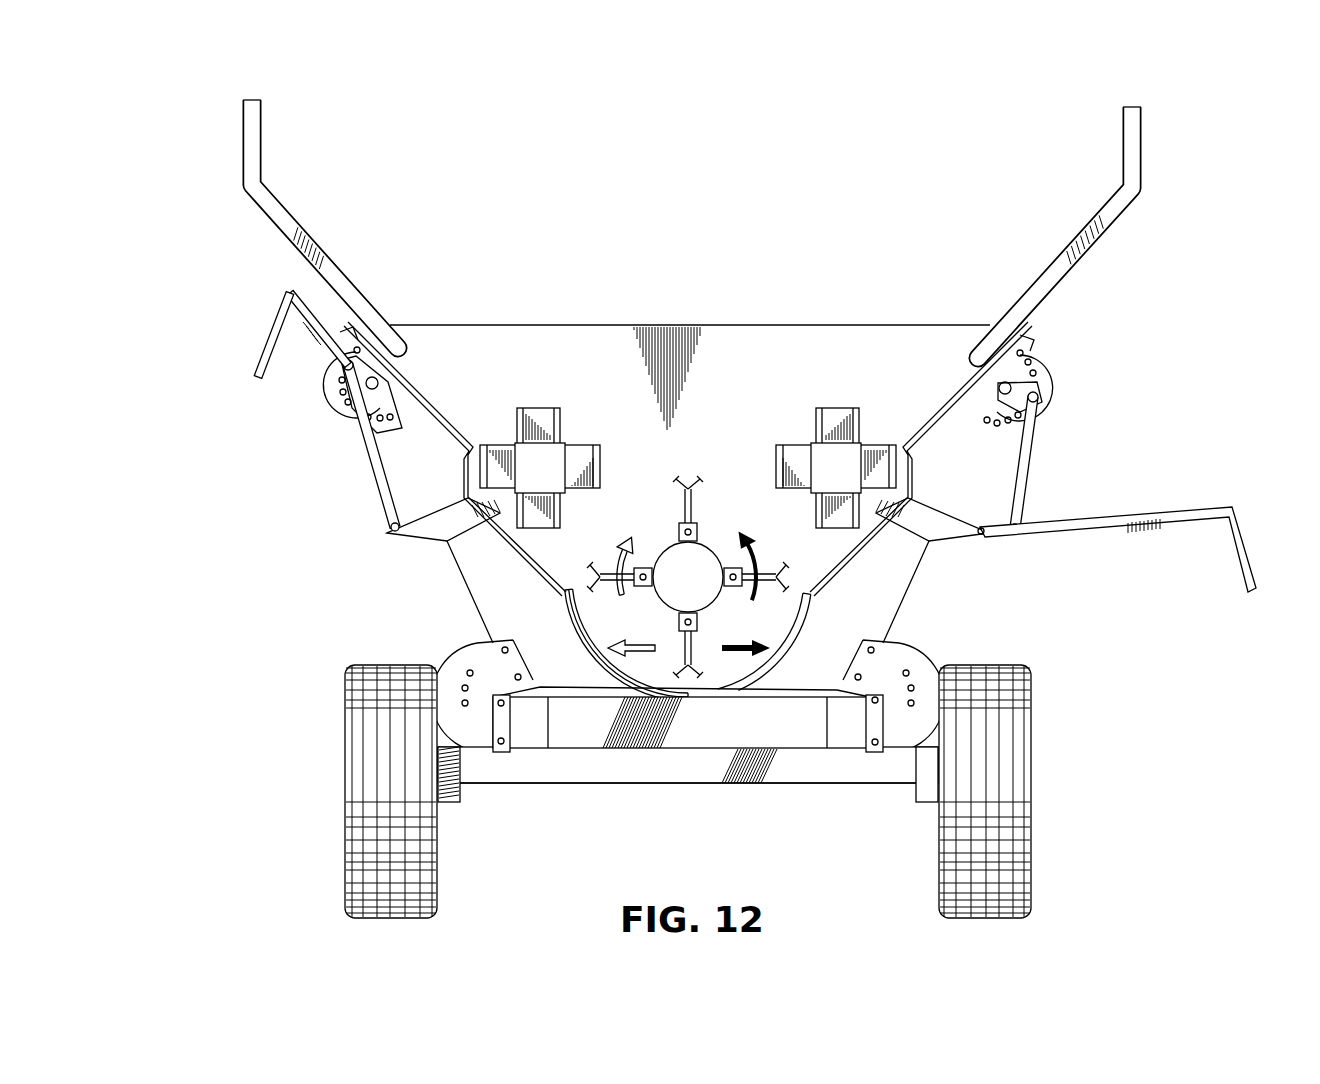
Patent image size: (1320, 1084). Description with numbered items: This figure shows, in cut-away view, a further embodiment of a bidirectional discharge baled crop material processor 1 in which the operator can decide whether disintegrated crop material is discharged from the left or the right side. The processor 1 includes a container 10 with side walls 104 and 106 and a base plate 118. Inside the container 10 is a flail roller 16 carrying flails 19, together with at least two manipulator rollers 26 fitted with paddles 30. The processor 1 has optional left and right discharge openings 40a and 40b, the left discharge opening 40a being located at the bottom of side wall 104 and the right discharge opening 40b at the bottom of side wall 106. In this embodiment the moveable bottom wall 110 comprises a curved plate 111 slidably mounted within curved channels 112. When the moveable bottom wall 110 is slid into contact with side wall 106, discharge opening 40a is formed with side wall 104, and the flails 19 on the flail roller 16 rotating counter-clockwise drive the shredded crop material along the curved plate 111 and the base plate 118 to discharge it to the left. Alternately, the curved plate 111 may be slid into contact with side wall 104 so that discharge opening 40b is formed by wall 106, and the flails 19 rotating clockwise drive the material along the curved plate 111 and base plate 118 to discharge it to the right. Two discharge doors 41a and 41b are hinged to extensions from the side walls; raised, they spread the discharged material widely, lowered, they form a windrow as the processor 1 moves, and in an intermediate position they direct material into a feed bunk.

The baled crop material processor 1 is at (726, 502).
The container 10 is at (965, 277).
The flail roller 16 is at (670, 560).
The flails 19 is at (695, 500).
The manipulator rollers 26 is at (558, 452).
The paddles 30 is at (540, 408).
The left discharge opening 40a is at (828, 613).
The right discharge opening 40b is at (550, 615).
The discharge door 41a is at (1075, 518).
The discharge door 41b is at (352, 432).
The side wall 104 is at (1128, 212).
The side wall 106 is at (258, 197).
The moveable bottom wall 110 is at (603, 666).
The curved plate 111 is at (507, 641).
The curved channels 112 is at (869, 641).
The base plate 118 is at (567, 697).